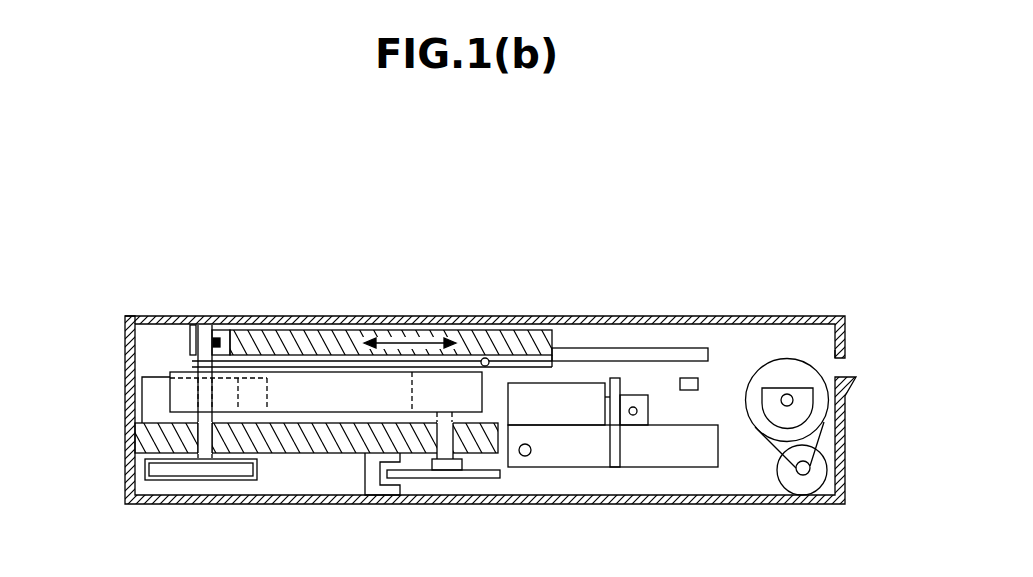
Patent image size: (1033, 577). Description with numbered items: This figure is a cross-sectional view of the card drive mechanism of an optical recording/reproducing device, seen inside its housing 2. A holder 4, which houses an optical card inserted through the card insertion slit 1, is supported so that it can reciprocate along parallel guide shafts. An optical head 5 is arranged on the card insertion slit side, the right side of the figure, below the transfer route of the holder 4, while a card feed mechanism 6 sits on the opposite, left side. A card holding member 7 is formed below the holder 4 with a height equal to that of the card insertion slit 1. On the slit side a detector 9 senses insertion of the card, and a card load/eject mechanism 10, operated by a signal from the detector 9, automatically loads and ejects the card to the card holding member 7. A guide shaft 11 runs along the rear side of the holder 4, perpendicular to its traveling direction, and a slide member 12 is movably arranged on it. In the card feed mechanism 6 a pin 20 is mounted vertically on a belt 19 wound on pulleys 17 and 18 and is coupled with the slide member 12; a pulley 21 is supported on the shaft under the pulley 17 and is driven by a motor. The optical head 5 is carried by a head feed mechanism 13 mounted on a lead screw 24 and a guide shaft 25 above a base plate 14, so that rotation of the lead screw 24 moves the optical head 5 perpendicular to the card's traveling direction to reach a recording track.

The card insertion slit 1 is at (843, 366).
The housing 2 is at (725, 316).
The holder 4 is at (343, 340).
The optical head 5 is at (563, 414).
The card feed mechanism 6 is at (146, 306).
The card holding member 7 is at (484, 358).
The detector 9 is at (700, 384).
The card load/eject mechanism 10 is at (806, 340).
The guide shaft 11 is at (228, 313).
The slide member 12 is at (195, 315).
The head feed mechanism 13 is at (632, 376).
The base plate 14 is at (301, 455).
The pulley 17 is at (178, 371).
The pulley 18 is at (465, 402).
The belt 19 is at (353, 403).
The pin 20 is at (205, 315).
The pulley 21 is at (236, 472).
The lead screw 24 is at (636, 415).
The guide shaft 25 is at (528, 455).